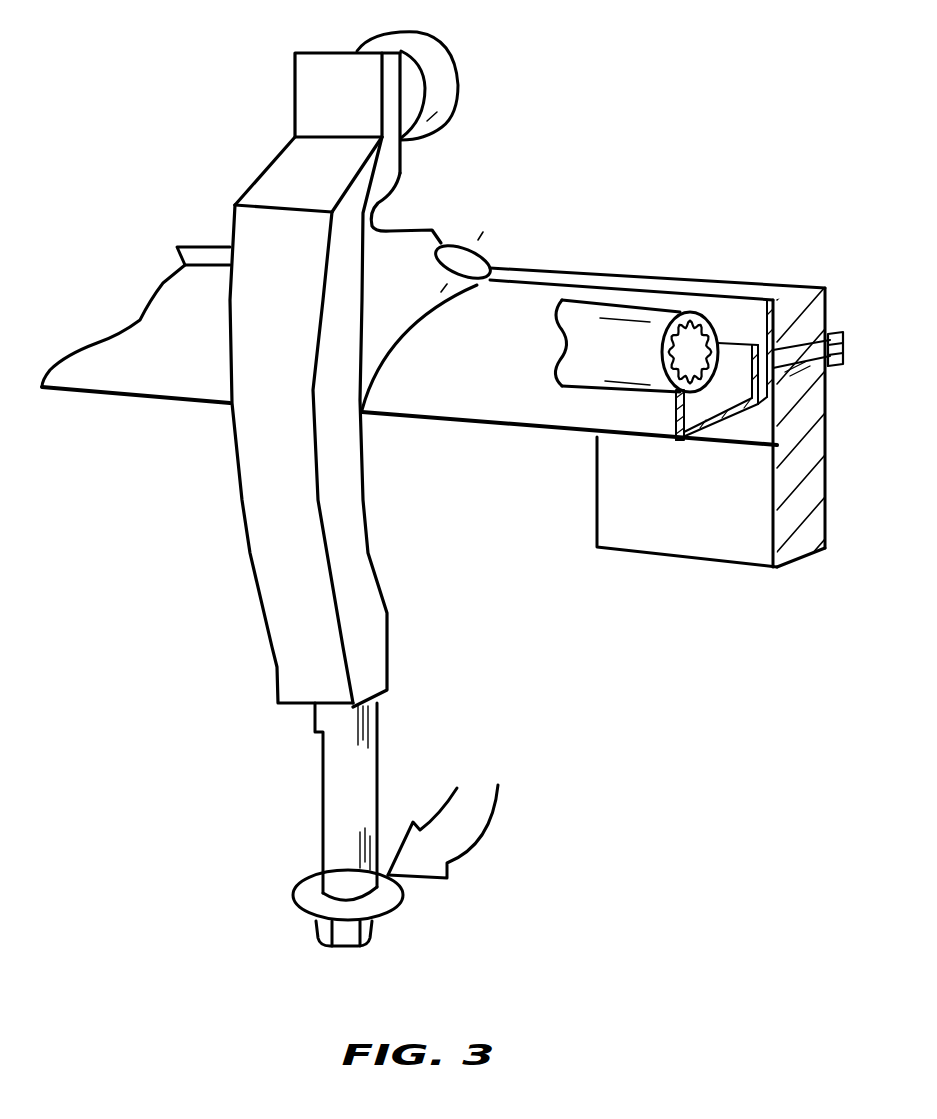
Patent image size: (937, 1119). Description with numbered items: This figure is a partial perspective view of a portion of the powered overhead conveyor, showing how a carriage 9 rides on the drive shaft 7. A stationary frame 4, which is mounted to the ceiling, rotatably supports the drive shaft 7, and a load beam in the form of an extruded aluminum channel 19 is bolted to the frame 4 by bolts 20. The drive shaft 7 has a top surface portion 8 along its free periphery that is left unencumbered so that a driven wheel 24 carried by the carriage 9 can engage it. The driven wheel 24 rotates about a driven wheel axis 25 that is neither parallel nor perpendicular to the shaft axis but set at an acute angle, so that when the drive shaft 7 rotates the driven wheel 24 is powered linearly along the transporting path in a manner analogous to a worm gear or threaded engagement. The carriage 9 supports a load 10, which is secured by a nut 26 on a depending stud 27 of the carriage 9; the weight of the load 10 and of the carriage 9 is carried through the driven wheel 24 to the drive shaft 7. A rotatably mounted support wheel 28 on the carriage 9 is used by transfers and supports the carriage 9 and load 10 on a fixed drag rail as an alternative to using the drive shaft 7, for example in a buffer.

The stationary frame 4 is at (726, 450).
The drive shaft 7 is at (597, 335).
The top surface portion 8 is at (683, 315).
The carriage 9 is at (292, 622).
The load 10 is at (450, 801).
The extruded aluminum channel 19 is at (193, 385).
The bolts 20 is at (837, 333).
The driven wheel 24 is at (487, 257).
The driven wheel axis 25 is at (489, 226).
The nut 26 is at (377, 928).
The depending stud 27 is at (345, 825).
The support wheel 28 is at (437, 90).